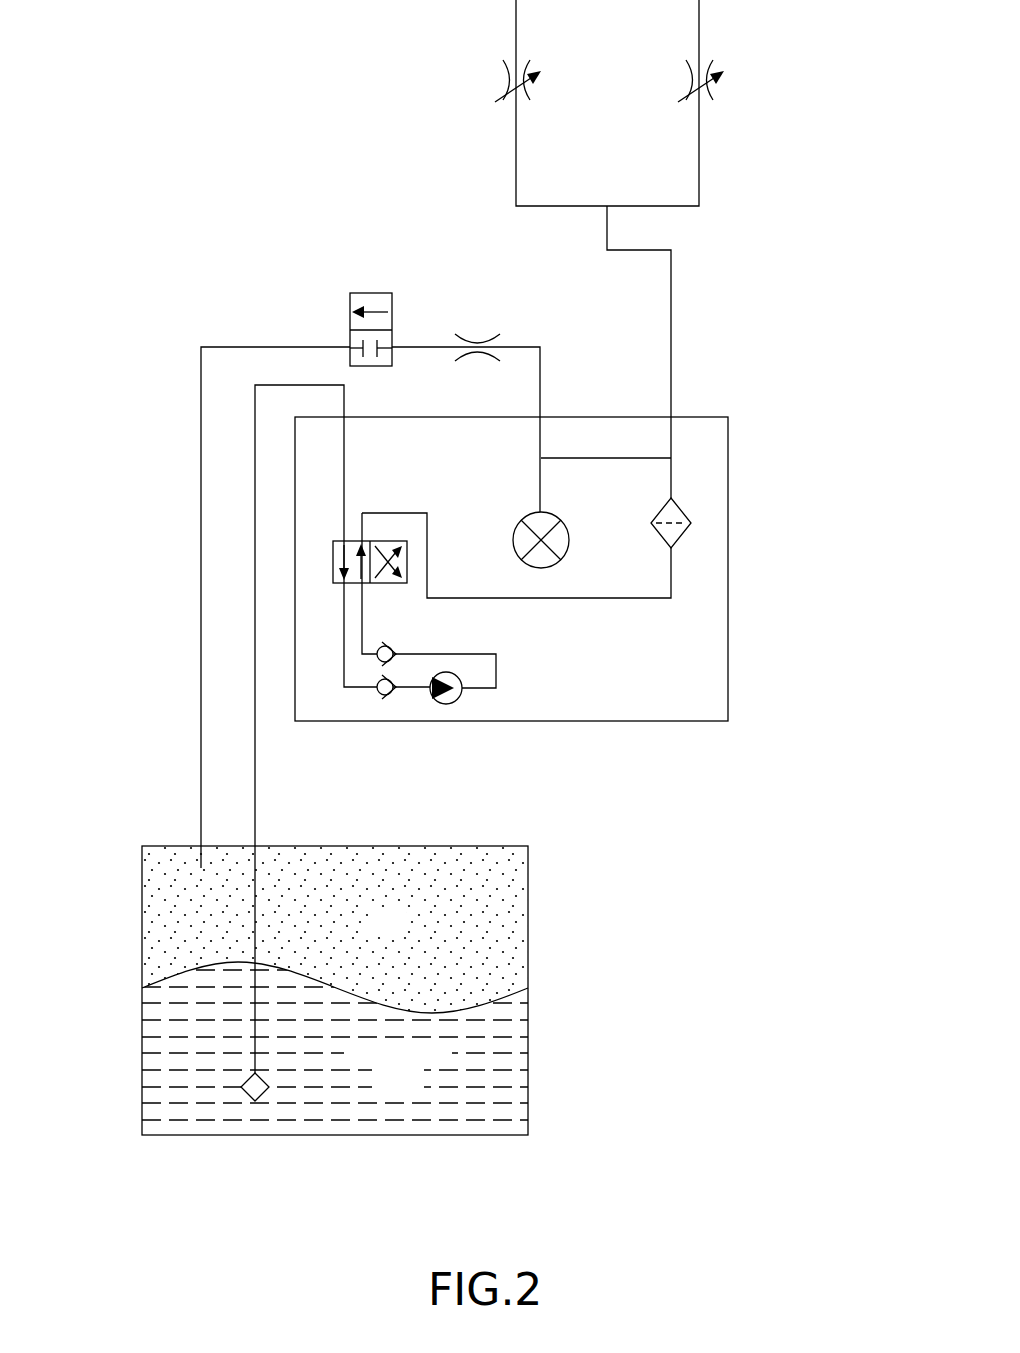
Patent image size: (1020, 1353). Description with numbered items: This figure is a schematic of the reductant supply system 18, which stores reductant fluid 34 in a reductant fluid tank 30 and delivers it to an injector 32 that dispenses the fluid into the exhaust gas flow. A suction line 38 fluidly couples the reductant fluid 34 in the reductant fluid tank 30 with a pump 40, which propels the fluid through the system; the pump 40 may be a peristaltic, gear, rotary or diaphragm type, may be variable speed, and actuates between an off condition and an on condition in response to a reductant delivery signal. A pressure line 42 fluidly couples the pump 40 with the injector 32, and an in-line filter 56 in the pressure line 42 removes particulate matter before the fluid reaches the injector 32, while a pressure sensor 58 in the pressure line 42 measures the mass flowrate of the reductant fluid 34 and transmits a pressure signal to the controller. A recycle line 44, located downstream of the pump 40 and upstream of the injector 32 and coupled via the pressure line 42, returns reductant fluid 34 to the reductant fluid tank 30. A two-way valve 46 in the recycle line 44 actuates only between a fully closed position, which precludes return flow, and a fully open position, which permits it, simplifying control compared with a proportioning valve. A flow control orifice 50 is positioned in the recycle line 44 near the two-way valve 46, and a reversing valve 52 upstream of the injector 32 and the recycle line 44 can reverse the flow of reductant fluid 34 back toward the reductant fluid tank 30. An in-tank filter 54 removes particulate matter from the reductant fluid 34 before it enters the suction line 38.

The reductant supply system 18 is at (194, 82).
The injector 32 is at (520, 92).
The two-way valve 46 is at (370, 293).
The flow control orifice 50 is at (477, 345).
The recycle line 44 is at (201, 608).
The reversing valve 52 is at (333, 562).
The pressure sensor 58 is at (570, 540).
The in-line filter 56 is at (683, 512).
The pressure line 42 is at (548, 598).
The pump 40 is at (458, 700).
The suction line 38 is at (255, 812).
The reductant fluid tank 30 is at (528, 948).
The reductant fluid 34 is at (520, 1095).
The strainer 54 is at (247, 1097).